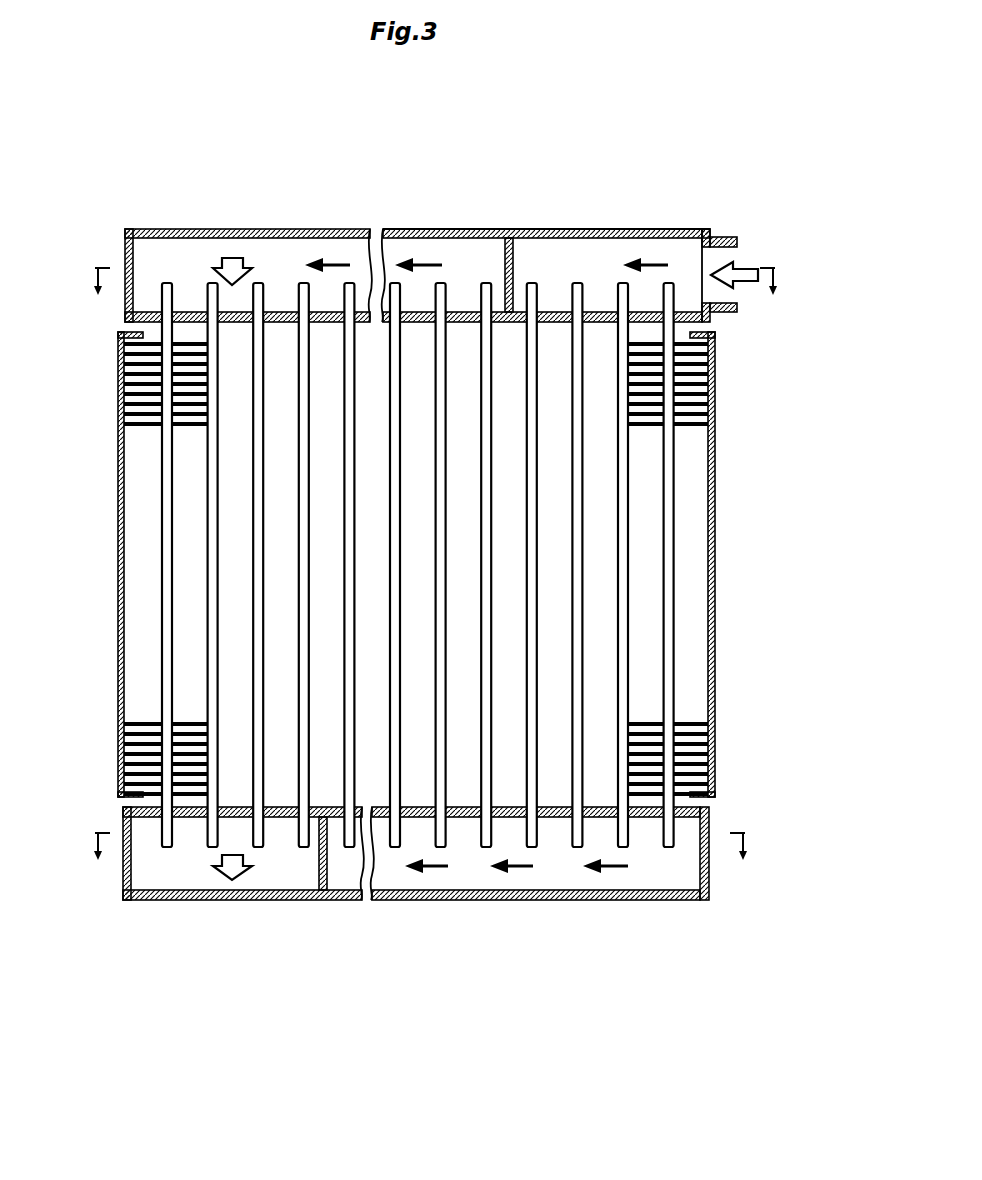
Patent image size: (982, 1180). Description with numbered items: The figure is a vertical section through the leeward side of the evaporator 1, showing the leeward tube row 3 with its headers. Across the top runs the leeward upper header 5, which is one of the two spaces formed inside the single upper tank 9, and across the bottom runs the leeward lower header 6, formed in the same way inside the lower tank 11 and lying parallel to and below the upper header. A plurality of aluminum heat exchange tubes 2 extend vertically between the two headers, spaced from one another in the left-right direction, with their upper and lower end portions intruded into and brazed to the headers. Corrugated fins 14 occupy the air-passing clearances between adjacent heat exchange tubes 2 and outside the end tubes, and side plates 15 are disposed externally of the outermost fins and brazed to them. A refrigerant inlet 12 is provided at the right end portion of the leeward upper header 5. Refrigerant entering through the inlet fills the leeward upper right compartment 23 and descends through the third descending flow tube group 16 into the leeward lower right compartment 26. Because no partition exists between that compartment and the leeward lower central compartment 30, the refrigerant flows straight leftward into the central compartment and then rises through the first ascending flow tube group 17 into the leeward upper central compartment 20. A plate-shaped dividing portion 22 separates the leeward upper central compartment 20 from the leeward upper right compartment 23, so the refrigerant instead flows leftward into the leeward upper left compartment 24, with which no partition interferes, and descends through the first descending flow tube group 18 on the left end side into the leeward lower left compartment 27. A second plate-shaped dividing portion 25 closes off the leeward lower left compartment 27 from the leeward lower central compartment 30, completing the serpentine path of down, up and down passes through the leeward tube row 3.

The evaporator 1 is at (604, 124).
The heat exchange tubes 2 is at (206, 528).
The leeward tube row 3 is at (674, 510).
The leeward upper header 5 is at (402, 229).
The leeward lower header 6 is at (455, 900).
The tank 9 is at (635, 204).
The tank 11 is at (575, 908).
The refrigerant inlet 12 is at (750, 262).
The corrugated fins 14 is at (643, 718).
The side plates 15 is at (118, 603).
The third descending flow tube group 16 is at (577, 283).
The first ascending flow tube group 17 is at (483, 282).
The first descending flow tube group 18 is at (278, 295).
The leeward upper central compartment 20 is at (473, 229).
The dividing portion 22 is at (513, 267).
The leeward upper right compartment 23 is at (681, 229).
The leeward upper left compartment 24 is at (290, 229).
The dividing portion 25 is at (300, 900).
The leeward lower right compartment 26 is at (672, 900).
The leeward lower left compartment 27 is at (165, 900).
The leeward lower central compartment 30 is at (395, 900).